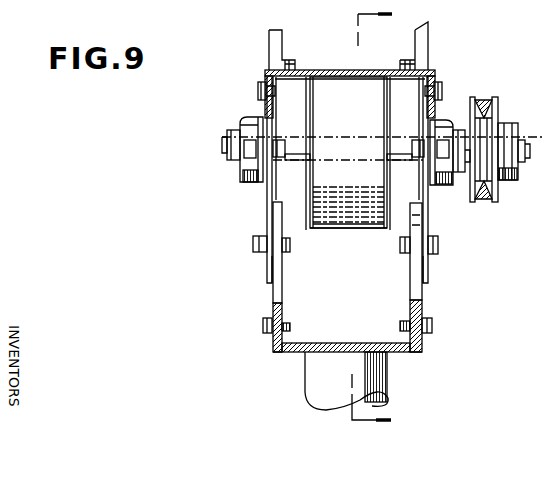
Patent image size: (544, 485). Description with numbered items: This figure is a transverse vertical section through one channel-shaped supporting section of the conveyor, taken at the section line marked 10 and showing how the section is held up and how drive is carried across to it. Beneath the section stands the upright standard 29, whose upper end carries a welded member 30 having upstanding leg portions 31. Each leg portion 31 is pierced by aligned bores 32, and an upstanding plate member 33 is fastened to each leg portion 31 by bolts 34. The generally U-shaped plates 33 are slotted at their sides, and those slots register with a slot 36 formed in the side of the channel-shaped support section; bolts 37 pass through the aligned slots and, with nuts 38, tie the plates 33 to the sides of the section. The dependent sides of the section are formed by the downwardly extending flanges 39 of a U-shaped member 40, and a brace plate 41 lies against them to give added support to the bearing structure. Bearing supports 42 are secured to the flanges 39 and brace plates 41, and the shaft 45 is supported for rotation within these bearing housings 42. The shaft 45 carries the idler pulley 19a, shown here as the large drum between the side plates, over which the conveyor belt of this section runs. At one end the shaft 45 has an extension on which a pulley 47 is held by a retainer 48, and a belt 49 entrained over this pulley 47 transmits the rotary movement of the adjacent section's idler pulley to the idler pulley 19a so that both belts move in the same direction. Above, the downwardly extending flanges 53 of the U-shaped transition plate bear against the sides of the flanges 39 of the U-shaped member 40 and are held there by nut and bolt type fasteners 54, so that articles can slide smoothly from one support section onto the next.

The section line 10 is at (385, 215).
The idler pulley 19a is at (300, 206).
The standard 29 is at (388, 371).
The member 30 is at (304, 356).
The leg portion 31 is at (290, 332).
The aligned bores 32 is at (283, 312).
The upstanding plate member 33 is at (272, 347).
The bolt 34 is at (434, 326).
The slot 36 is at (422, 222).
The bolt 37 is at (256, 250).
The nut 38 is at (290, 250).
The flange 39 is at (266, 280).
The U-shaped member 40 is at (392, 80).
The brace plate 41 is at (278, 192).
The bearing support 42 is at (247, 118).
The shaft 45 is at (330, 134).
The pulley 47 is at (500, 110).
The retainer 48 is at (512, 184).
The belt 49 is at (486, 104).
The flange 53 is at (434, 80).
The nut and bolt type fastener 54 is at (257, 92).